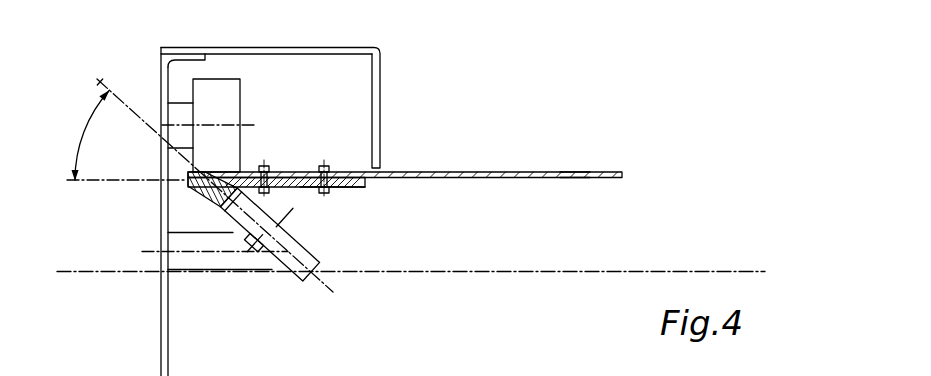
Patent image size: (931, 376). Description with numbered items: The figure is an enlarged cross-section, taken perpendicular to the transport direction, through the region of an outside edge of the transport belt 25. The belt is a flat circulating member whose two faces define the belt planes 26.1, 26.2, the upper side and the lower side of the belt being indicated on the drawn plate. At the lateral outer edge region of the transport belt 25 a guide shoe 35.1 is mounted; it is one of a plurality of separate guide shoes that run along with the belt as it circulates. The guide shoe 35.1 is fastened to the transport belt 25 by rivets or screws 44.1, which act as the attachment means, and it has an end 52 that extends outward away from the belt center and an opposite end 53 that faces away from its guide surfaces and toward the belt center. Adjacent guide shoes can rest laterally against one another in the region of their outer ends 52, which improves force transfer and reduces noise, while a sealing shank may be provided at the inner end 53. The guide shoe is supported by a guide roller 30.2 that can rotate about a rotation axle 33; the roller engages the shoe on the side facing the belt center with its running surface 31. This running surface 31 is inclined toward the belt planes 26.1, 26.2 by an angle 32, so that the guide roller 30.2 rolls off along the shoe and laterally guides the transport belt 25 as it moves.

The transport belt 25 is at (485, 172).
The belt plane 26.1 is at (576, 166).
The belt plane 26.2 is at (576, 187).
The guide roller 30.2 is at (288, 262).
The running surface 31 is at (305, 280).
The angle 32 is at (83, 137).
The rotation axle 33 is at (293, 210).
The guide shoe 35.1 is at (346, 202).
The rivets or screws 44.1 is at (325, 167).
The end of guide shoe 52 is at (176, 190).
The end of guide shoe 53 is at (384, 188).